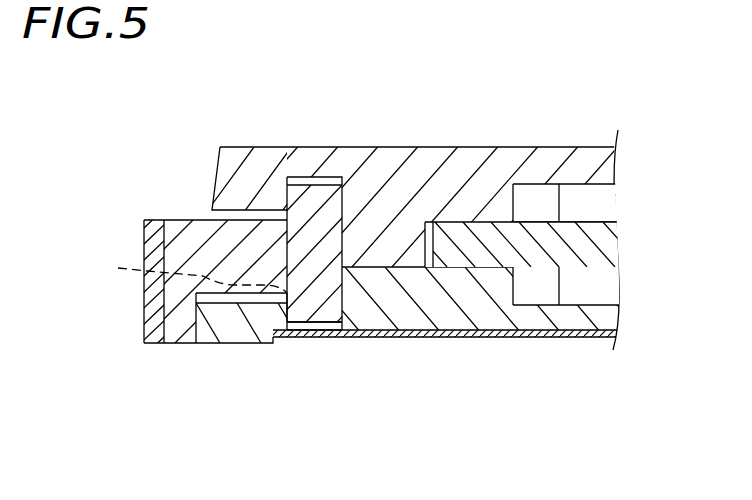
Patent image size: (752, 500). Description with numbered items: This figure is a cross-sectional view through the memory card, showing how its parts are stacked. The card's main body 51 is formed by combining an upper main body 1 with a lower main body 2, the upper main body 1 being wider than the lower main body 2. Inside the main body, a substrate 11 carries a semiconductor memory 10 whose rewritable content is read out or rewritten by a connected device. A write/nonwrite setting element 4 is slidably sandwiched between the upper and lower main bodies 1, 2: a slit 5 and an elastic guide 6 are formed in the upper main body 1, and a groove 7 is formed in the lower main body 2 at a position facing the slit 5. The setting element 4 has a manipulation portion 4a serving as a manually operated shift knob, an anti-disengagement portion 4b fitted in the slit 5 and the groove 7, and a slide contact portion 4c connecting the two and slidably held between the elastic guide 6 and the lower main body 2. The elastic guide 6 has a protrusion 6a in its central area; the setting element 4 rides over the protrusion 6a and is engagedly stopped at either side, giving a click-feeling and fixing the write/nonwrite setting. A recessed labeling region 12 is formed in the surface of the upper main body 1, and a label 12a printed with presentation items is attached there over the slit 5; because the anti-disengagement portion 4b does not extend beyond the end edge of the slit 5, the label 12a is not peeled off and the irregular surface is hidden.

The upper main body 1 is at (445, 313).
The lower main body 2 is at (392, 213).
The write/nonwrite setting element 4 is at (213, 195).
The manipulation portion 4a is at (143, 243).
The anti-disengagement portion 4b is at (250, 156).
The slide contact portion 4c is at (212, 247).
The slit 5 is at (312, 332).
The elastic guide 6 is at (251, 323).
The protrusion 6a is at (182, 274).
The groove 7 is at (309, 185).
The semiconductor memory 10 is at (600, 293).
The substrate 11 is at (490, 250).
The labeling region 12 is at (521, 335).
The label 12a is at (560, 337).
The main body 51 is at (445, 307).